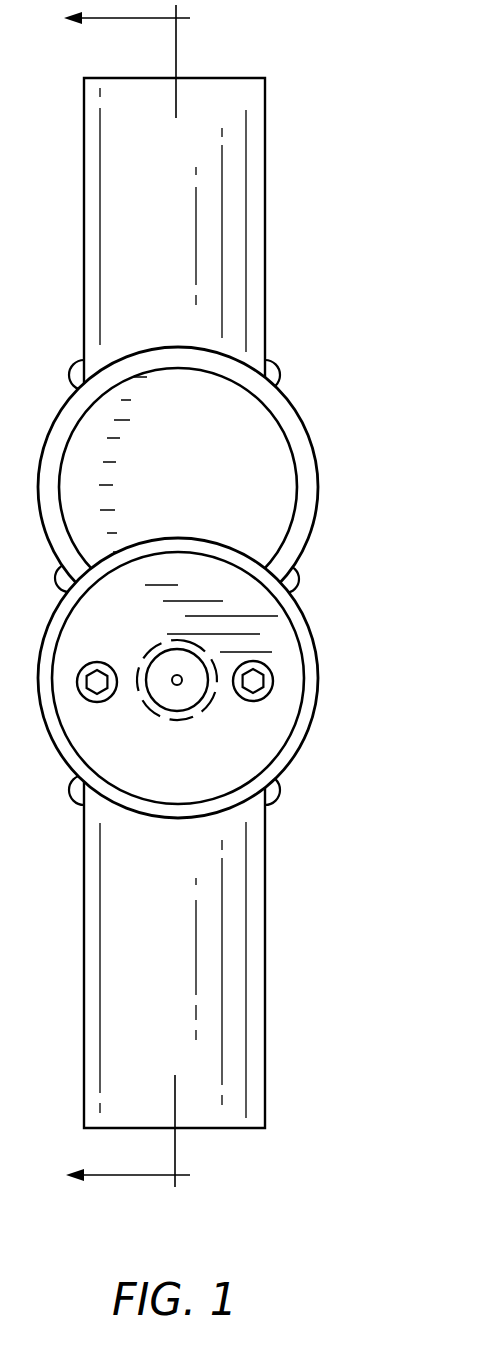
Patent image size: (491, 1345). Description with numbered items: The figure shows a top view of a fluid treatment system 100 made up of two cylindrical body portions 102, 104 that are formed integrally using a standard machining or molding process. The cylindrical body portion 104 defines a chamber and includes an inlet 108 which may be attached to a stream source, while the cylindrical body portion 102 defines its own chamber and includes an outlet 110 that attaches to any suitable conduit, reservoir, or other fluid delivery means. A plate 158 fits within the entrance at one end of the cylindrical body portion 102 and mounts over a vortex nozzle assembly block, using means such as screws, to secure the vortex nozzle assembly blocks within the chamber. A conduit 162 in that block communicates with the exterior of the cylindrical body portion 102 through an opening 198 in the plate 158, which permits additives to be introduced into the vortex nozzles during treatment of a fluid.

The fluid treatment system 100 is at (239, 598).
The cylindrical body portion 102 is at (216, 678).
The cylindrical body portion 104 is at (313, 473).
The inlet 108 is at (168, 253).
The outlet 110 is at (168, 995).
The plate 158 is at (196, 793).
The conduit 162 is at (150, 673).
The opening 198 is at (181, 683).